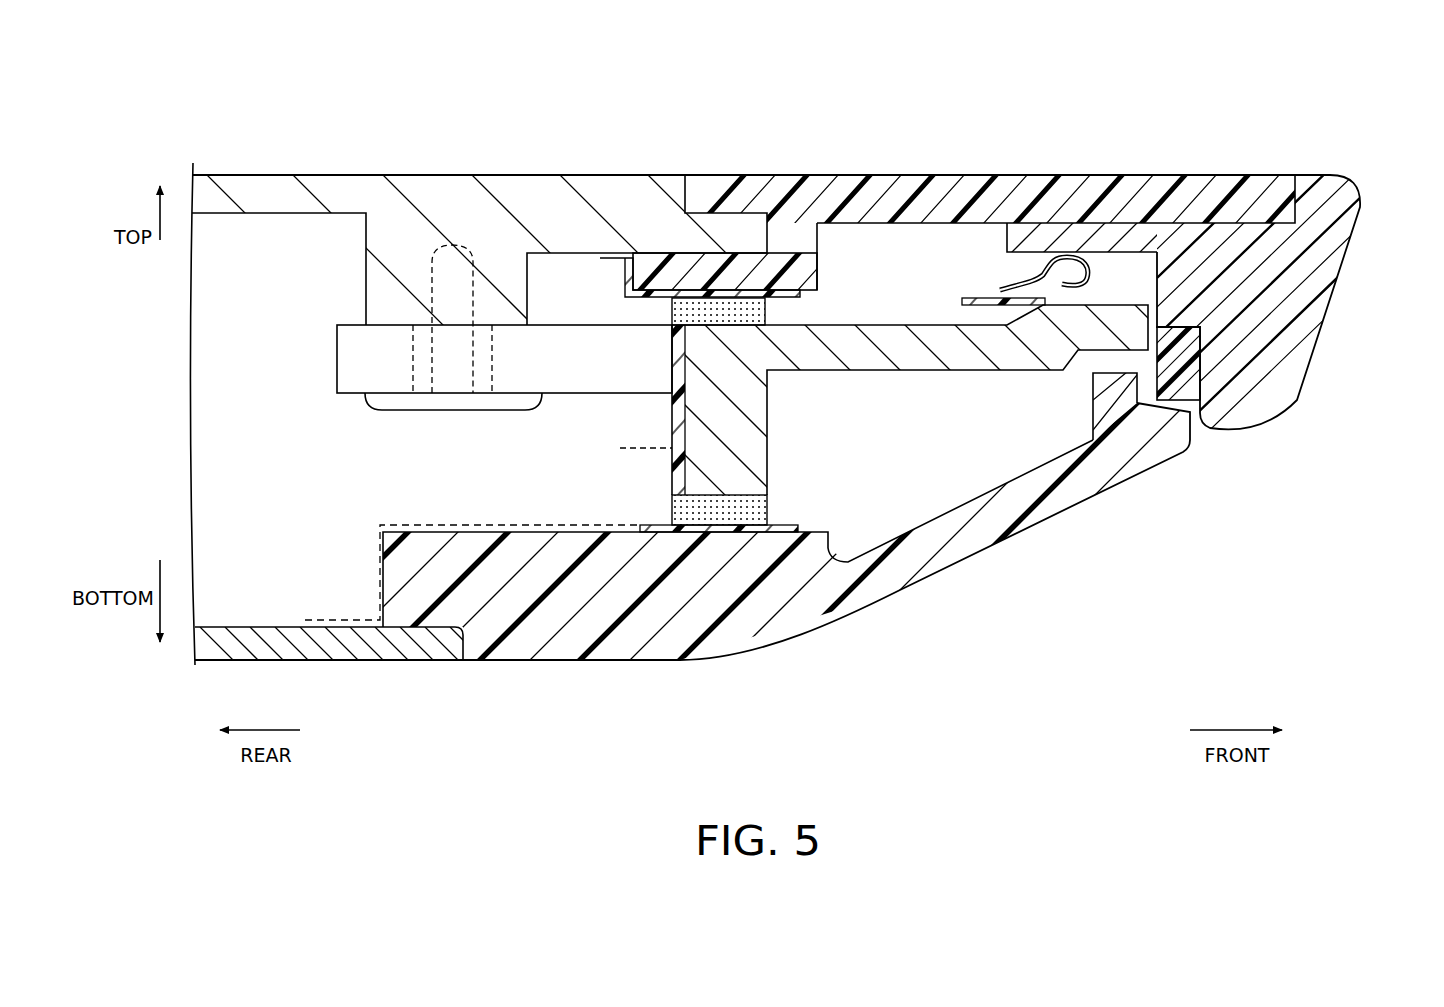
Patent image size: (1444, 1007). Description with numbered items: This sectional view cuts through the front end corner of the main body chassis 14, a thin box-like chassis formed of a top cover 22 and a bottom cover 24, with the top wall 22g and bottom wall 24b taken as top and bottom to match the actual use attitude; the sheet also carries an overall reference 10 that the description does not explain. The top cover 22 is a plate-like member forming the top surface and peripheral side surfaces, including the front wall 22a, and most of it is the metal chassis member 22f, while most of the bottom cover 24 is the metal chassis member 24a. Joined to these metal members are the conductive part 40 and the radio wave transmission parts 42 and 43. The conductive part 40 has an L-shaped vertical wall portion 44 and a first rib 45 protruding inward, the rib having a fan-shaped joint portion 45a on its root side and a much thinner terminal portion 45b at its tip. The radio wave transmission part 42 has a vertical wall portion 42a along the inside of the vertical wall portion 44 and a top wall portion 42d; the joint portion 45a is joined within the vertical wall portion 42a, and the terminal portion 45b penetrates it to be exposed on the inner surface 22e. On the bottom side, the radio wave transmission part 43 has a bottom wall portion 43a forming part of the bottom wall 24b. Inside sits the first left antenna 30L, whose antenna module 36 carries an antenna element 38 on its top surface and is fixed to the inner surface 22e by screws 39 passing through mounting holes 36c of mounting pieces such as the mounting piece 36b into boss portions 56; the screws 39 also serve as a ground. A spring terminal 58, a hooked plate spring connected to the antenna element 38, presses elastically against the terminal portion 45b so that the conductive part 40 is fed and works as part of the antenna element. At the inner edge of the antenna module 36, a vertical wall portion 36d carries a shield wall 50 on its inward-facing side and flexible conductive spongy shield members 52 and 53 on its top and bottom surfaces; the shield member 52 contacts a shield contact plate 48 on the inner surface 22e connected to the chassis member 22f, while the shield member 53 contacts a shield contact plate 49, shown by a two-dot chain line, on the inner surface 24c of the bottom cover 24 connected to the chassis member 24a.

The electronic device 10 is at (121, 65).
The main body chassis 14 is at (1335, 428).
The top cover 22 is at (1258, 416).
The front wall 22a is at (1357, 230).
The inner surface 22e is at (845, 250).
The chassis member 22f is at (274, 190).
The top wall 22g is at (495, 175).
The bottom cover 24 is at (1150, 486).
The chassis member 24a is at (370, 650).
The bottom wall 24b is at (595, 650).
The inner surface 24c is at (547, 527).
The first left antenna 30L is at (870, 380).
The antenna module 36 is at (1023, 355).
The mounting piece 36b is at (578, 372).
The mounting hole 36c is at (412, 346).
The vertical wall portion 36d is at (760, 443).
The antenna element 38 is at (980, 297).
The screw 39 is at (380, 404).
The conductive part 40 is at (1336, 290).
The radio wave transmission part 42 is at (1024, 172).
The vertical wall portion 42a is at (1190, 352).
The top wall portion 42d is at (908, 193).
The radio wave transmission part 43 is at (962, 575).
The bottom wall portion 43a is at (1075, 510).
The vertical wall portion 44 is at (1296, 323).
The first rib 45 is at (1242, 108).
The joint portion 45a is at (1187, 253).
The terminal portion 45b is at (1168, 293).
The shield contact plate 48 is at (730, 260).
The shield contact plate 49 is at (338, 620).
The shield wall 50 is at (620, 448).
The shield member 52 is at (690, 300).
The shield member 53 is at (683, 522).
The boss portion 56 is at (385, 292).
The spring terminal 58 is at (1127, 243).